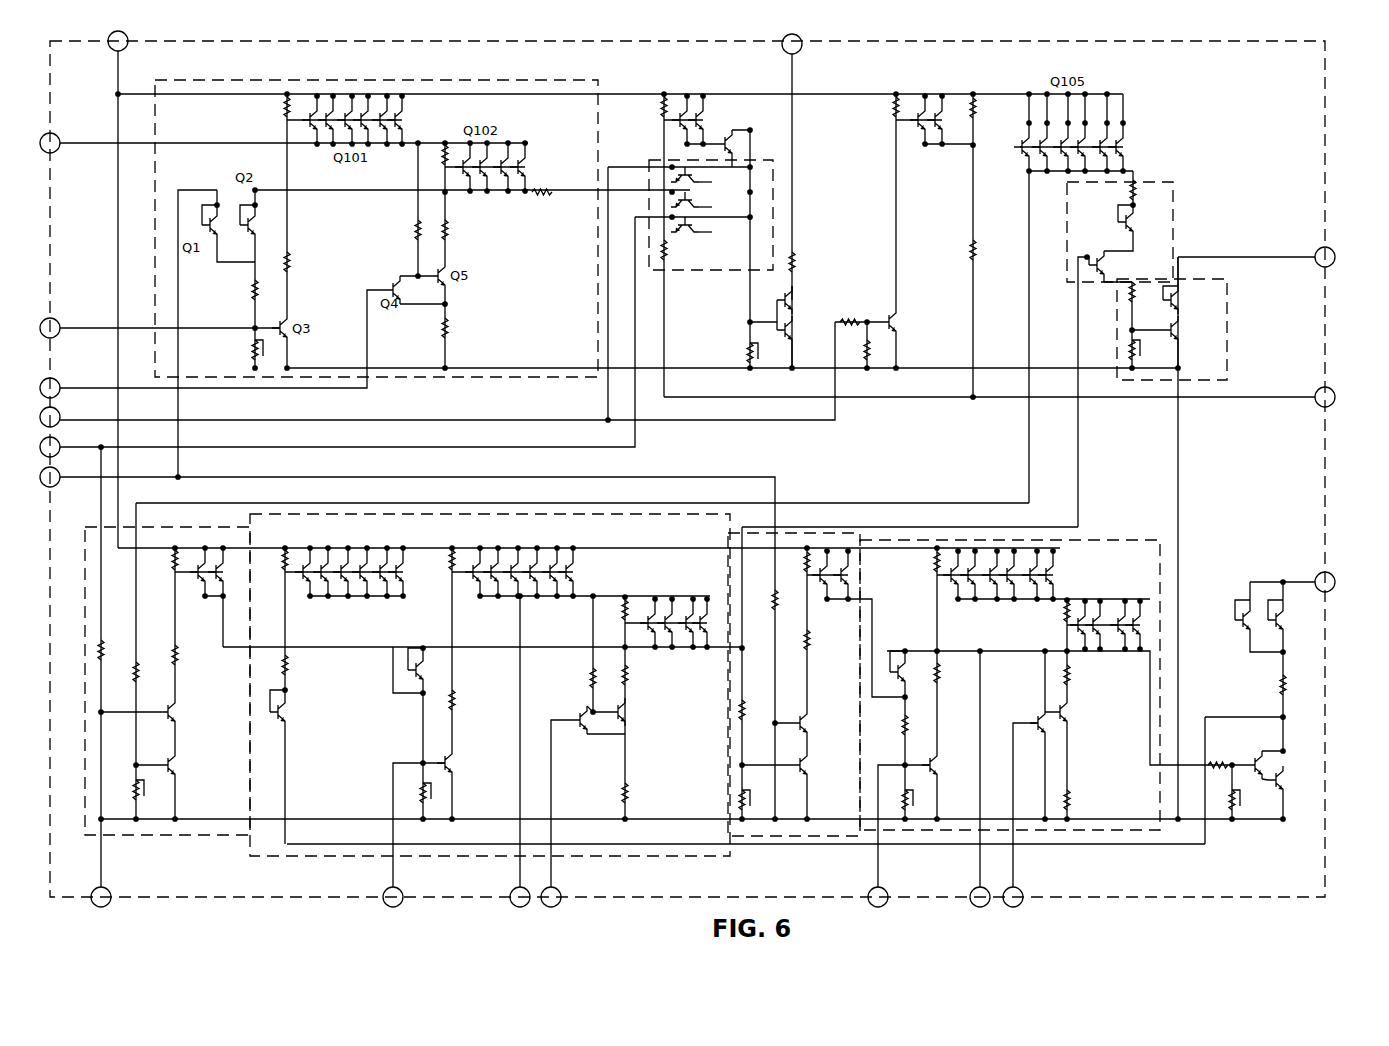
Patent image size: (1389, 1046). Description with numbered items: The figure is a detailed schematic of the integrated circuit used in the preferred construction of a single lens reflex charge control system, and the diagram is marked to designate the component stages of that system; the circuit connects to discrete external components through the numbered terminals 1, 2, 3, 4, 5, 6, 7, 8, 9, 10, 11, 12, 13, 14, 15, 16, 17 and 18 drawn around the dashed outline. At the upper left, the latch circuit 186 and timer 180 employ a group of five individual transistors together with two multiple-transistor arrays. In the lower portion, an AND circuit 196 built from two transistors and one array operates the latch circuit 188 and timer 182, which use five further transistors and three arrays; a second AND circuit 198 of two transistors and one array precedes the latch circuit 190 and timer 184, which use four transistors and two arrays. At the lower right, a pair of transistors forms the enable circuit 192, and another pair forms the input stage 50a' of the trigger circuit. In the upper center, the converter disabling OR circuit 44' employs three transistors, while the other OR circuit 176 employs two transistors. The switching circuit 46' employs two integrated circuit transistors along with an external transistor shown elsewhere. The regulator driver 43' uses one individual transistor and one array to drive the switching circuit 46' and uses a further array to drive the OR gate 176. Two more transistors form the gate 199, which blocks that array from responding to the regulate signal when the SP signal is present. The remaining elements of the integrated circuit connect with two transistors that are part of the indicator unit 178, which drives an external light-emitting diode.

The timer 180 is at (392, 196).
The latch circuit 186 is at (519, 80).
The timer 182 is at (707, 718).
The latch circuit 188 is at (330, 856).
The timer 184 is at (1053, 649).
The latch circuit 190 is at (1090, 540).
The regulator driver 43' is at (835, 204).
The converter disabling OR circuit 44' is at (688, 194).
The switching circuit 46' is at (836, 289).
The OR circuit 176 is at (1173, 210).
The indicator unit 178 is at (1230, 297).
The AND circuit 196 is at (163, 836).
The AND circuit 198 is at (782, 836).
The gate 199 is at (882, 402).
The input stage 50a' is at (1284, 713).
The enable circuit 192 is at (1331, 751).
The terminal 1 is at (160, 328).
The terminal 2 is at (284, 143).
The terminal 3 is at (118, 289).
The terminal 4 is at (212, 344).
The terminal 5 is at (414, 835).
The terminal 6 is at (556, 813).
The terminal 7 is at (520, 750).
The terminal 8 is at (899, 835).
The terminal 9 is at (980, 778).
The terminal 10 is at (1020, 815).
The terminal 11 is at (1292, 582).
The terminal 12 is at (1255, 534).
The terminal 13 is at (998, 266).
The terminal 14 is at (437, 297).
The terminal 15 is at (792, 202).
The terminal 16 is at (687, 862).
The terminal 17 is at (337, 552).
The terminal 18 is at (409, 505).